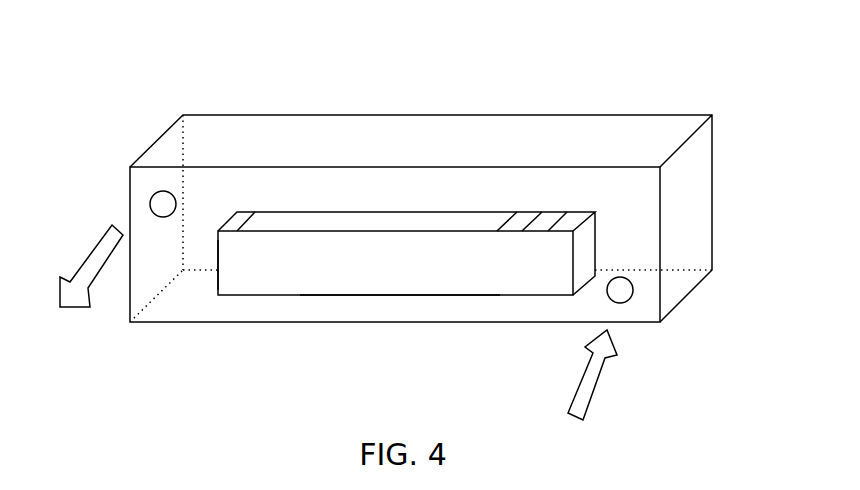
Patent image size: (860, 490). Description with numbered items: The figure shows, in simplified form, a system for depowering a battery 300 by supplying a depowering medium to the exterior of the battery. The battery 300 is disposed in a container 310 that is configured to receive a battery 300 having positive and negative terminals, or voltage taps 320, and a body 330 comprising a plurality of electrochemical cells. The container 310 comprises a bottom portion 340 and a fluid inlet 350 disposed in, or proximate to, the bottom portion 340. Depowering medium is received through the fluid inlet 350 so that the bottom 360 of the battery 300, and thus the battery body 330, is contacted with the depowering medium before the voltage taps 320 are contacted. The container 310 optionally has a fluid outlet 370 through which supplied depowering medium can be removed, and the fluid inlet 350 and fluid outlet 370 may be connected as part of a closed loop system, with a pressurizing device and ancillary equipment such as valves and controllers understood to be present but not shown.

The battery 300 is at (495, 263).
The container 310 is at (692, 182).
The voltage taps 320 is at (240, 228).
The battery body 330 is at (230, 262).
The bottom portion 340 is at (633, 320).
The fluid inlet 350 is at (633, 287).
The bottom of the battery 360 is at (416, 296).
The fluid outlet 370 is at (148, 205).